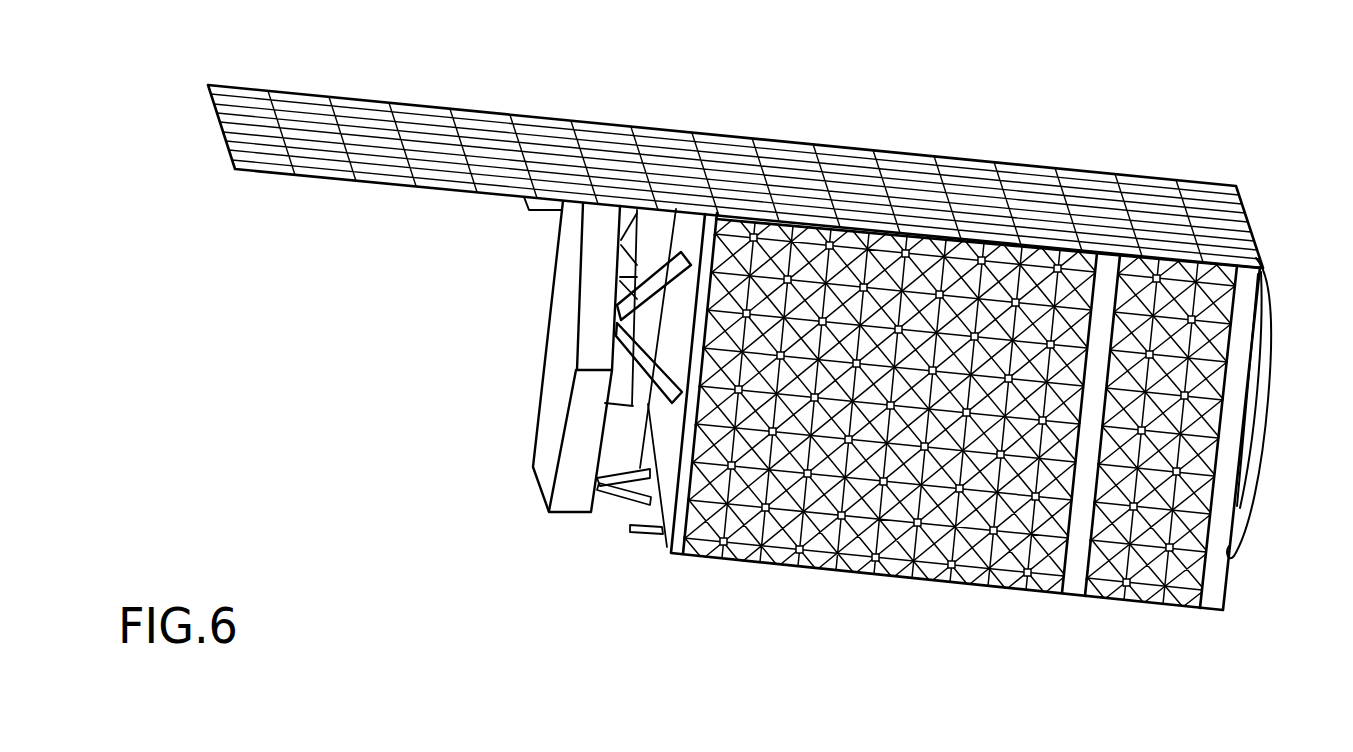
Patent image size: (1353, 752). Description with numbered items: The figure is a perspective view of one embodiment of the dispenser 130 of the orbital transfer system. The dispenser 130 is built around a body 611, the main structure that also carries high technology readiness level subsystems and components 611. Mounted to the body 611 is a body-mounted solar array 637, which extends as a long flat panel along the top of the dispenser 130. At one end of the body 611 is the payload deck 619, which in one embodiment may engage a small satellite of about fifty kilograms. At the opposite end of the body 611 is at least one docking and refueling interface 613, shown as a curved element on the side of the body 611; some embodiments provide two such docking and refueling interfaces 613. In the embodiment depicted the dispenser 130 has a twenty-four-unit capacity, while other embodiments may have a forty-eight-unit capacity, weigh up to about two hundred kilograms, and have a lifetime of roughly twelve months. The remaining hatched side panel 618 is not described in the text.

The dispenser 130 is at (156, 86).
The body-mounted solar array 637 is at (427, 138).
The docking and refueling interface 613 is at (1262, 337).
The payload deck 619 is at (550, 478).
The first side panel 618 is at (900, 562).
The body 611 is at (1119, 587).